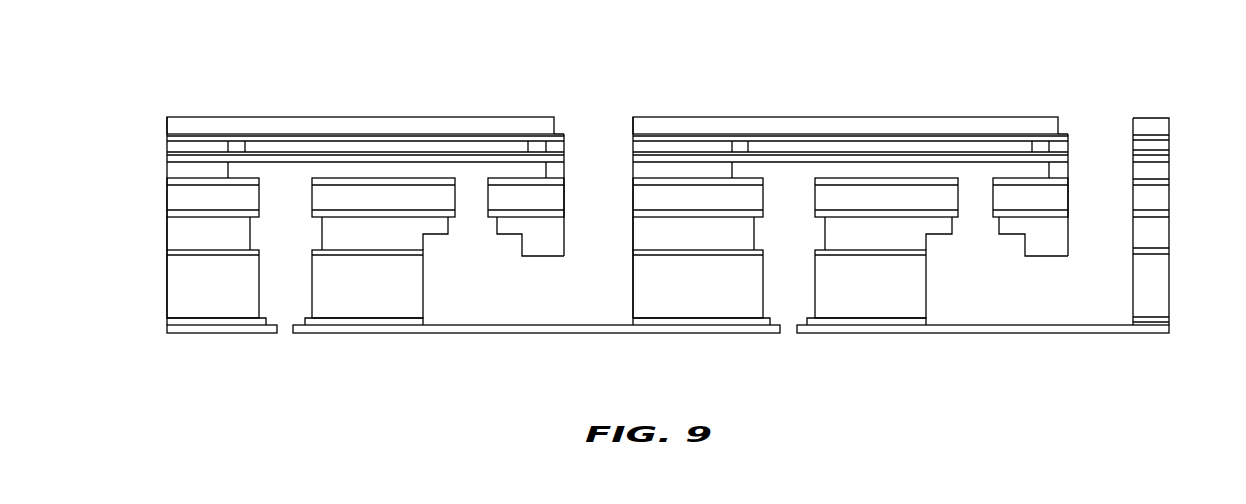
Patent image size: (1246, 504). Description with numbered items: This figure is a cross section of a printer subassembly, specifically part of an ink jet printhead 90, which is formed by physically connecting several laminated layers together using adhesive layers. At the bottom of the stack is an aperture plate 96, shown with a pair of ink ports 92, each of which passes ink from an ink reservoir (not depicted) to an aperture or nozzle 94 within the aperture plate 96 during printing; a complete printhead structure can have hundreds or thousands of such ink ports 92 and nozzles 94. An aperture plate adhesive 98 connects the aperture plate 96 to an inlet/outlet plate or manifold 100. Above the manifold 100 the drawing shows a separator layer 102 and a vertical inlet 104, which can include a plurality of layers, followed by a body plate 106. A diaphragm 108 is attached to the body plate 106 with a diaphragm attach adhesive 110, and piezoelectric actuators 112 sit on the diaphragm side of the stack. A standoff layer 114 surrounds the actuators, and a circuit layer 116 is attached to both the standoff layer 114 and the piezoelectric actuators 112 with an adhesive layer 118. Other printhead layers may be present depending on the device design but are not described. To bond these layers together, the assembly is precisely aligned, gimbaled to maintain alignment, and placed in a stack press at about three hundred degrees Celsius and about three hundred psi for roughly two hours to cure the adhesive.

The ink jet printhead 90 is at (217, 60).
The ink port 92 is at (542, 307).
The aperture (nozzle) 94 is at (278, 341).
The aperture plate 96 is at (167, 330).
The aperture plate adhesive 98 is at (1170, 322).
The inlet/outlet plate or manifold 100 is at (167, 288).
The separator layer 102 is at (167, 233).
The vertical inlet 104 is at (1172, 179).
The body plate 106 is at (167, 170).
The diaphragm 108 is at (1170, 153).
The diaphragm attach adhesive 110 is at (167, 162).
The piezoelectric actuator 112 is at (325, 145).
The standoff layer 114 is at (198, 145).
The circuit layer 116 is at (400, 127).
The adhesive layer 118 is at (472, 137).